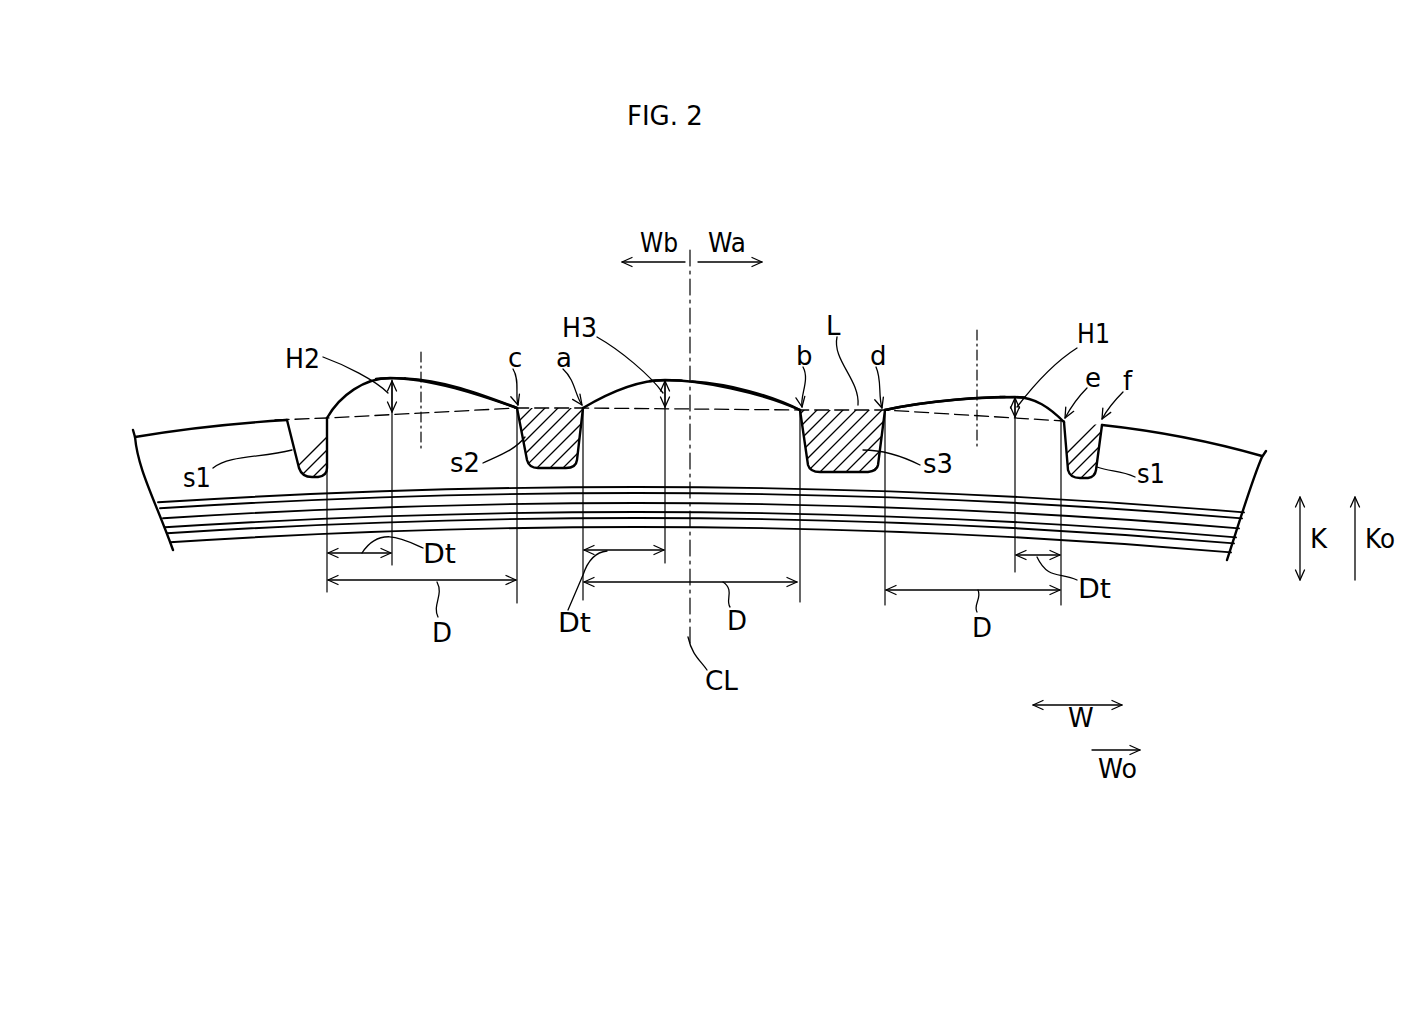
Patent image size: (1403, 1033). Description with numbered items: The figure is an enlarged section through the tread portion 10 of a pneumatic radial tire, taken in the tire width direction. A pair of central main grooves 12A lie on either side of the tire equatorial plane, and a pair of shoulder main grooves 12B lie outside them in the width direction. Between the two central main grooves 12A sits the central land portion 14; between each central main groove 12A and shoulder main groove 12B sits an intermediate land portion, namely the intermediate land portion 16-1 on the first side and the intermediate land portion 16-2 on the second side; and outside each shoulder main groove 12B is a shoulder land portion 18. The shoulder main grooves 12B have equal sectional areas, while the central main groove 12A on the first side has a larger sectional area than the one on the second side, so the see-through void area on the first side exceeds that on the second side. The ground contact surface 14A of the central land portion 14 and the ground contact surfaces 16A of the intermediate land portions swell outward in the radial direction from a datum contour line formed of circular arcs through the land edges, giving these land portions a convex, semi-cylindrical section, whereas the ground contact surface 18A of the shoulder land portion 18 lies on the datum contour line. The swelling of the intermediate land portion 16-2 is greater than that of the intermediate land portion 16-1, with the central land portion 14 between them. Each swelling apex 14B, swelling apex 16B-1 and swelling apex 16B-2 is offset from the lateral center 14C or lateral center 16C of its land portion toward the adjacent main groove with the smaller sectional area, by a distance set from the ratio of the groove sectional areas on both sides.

The tread portion 10 is at (714, 211).
The central main grooves 12A is at (551, 470).
The shoulder main grooves 12B is at (303, 474).
The central land portion 14 is at (747, 410).
The ground contact surface of the central land portion 14A is at (710, 382).
The swelling apex of the central land portion 14B is at (665, 380).
The lateral center of the central land portion 14C is at (692, 318).
The intermediate land portion on the first side 16-1 is at (952, 397).
The intermediate land portion on the second side 16-2 is at (455, 420).
The ground contact surface of the intermediate land portion 16A is at (438, 384).
The swelling apex of the intermediate land portion on the first side 16B-1 is at (1015, 397).
The swelling apex of the intermediate land portion on the second side 16B-2 is at (390, 378).
The lateral center of the intermediate land portion 16C is at (421, 363).
The shoulder land portions 18 is at (233, 440).
The ground contact surface of the shoulder land portion 18A is at (182, 437).